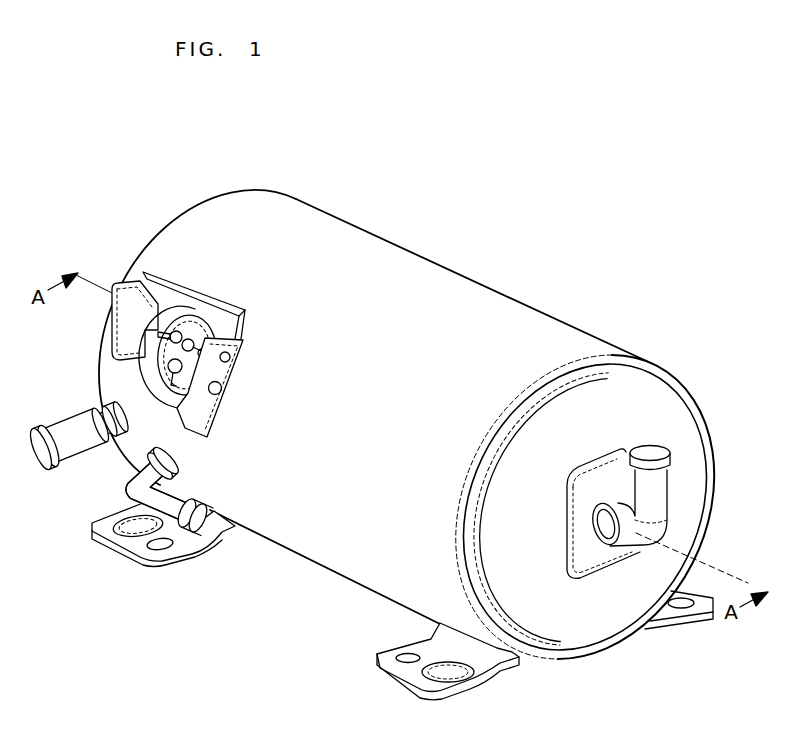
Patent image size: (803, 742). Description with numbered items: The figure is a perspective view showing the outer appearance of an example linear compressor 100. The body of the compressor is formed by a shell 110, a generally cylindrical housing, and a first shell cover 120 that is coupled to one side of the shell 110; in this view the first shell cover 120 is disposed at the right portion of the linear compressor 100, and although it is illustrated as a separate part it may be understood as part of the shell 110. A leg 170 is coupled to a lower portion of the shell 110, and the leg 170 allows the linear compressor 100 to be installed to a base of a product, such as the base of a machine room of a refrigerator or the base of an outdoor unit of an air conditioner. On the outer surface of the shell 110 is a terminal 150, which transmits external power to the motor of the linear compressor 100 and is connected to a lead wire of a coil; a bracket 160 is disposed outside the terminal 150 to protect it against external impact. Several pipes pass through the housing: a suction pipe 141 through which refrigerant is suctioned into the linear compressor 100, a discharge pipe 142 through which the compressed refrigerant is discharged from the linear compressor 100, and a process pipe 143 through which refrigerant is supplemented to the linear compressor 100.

The linear compressor 100 is at (476, 220).
The shell 110 is at (502, 318).
The first shell cover 120 is at (645, 405).
The suction pipe 141 is at (609, 546).
The discharge pipe 142 is at (132, 488).
The process pipe 143 is at (73, 428).
The terminal 150 is at (167, 323).
The bracket 160 is at (184, 278).
The leg 170 is at (378, 655).